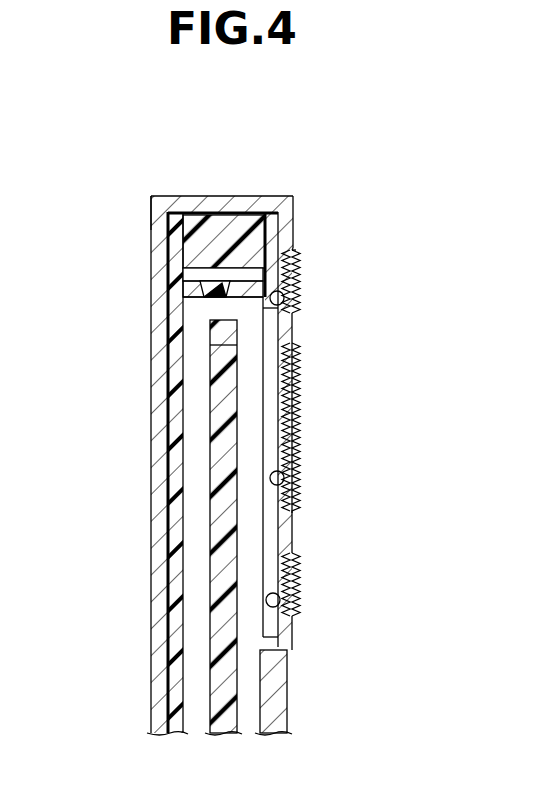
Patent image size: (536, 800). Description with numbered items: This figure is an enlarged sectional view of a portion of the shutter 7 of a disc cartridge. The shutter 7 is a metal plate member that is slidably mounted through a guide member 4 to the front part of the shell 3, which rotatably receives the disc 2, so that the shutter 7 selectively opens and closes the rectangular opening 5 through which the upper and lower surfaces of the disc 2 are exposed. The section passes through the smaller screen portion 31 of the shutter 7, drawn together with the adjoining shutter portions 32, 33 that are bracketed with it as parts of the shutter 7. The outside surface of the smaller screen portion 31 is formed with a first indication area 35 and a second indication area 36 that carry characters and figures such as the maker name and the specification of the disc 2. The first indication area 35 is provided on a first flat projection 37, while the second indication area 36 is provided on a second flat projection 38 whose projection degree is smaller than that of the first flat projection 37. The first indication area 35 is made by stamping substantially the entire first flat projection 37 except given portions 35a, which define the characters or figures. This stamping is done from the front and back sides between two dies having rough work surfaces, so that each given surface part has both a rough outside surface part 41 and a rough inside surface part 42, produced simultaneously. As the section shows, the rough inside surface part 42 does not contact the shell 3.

The disc 2 is at (215, 442).
The shell 3 is at (163, 327).
The guide member 4 is at (198, 242).
The rectangular opening 5 is at (268, 353).
The shutter 7 is at (220, 156).
The smaller screen portion 31 is at (289, 181).
The cap side portion 32 is at (153, 197).
The cap top portion 33 is at (233, 194).
The first indication area 35 is at (302, 417).
The given portions 35a is at (294, 538).
The second indication area 36 is at (302, 268).
The first flat projection 37 is at (296, 344).
The second flat projection 38 is at (296, 251).
The rough outside surface part 41 is at (292, 297).
The rough inside surface part 42 is at (290, 315).